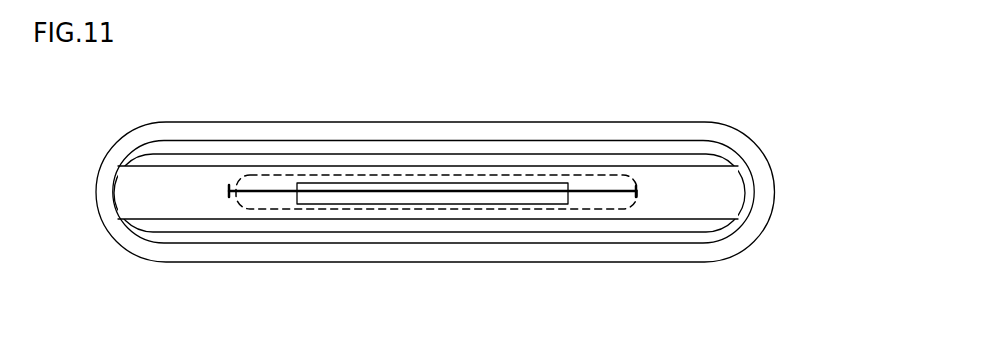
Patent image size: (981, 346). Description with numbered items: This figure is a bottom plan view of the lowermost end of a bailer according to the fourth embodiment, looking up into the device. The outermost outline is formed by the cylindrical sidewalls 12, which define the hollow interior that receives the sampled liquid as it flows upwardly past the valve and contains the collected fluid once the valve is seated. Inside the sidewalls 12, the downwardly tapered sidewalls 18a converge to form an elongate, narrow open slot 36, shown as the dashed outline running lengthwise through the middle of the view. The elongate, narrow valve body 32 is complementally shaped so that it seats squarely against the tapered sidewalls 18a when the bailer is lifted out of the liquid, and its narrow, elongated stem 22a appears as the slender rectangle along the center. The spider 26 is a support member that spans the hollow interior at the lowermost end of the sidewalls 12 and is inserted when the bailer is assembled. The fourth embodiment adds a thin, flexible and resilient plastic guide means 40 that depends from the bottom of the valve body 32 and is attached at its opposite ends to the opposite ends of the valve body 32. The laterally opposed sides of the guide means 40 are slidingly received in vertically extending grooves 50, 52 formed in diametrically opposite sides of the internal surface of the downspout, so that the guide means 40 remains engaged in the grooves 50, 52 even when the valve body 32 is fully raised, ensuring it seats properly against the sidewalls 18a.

The cylindrical sidewalls 12 is at (316, 137).
The valve body 32 is at (407, 153).
The tapered sidewall 18a is at (142, 162).
The spider 26 is at (733, 165).
The open slot 36 is at (337, 215).
The stem 22a is at (568, 193).
The guide means 40 is at (604, 191).
The groove 52 is at (228, 191).
The groove 50 is at (637, 188).